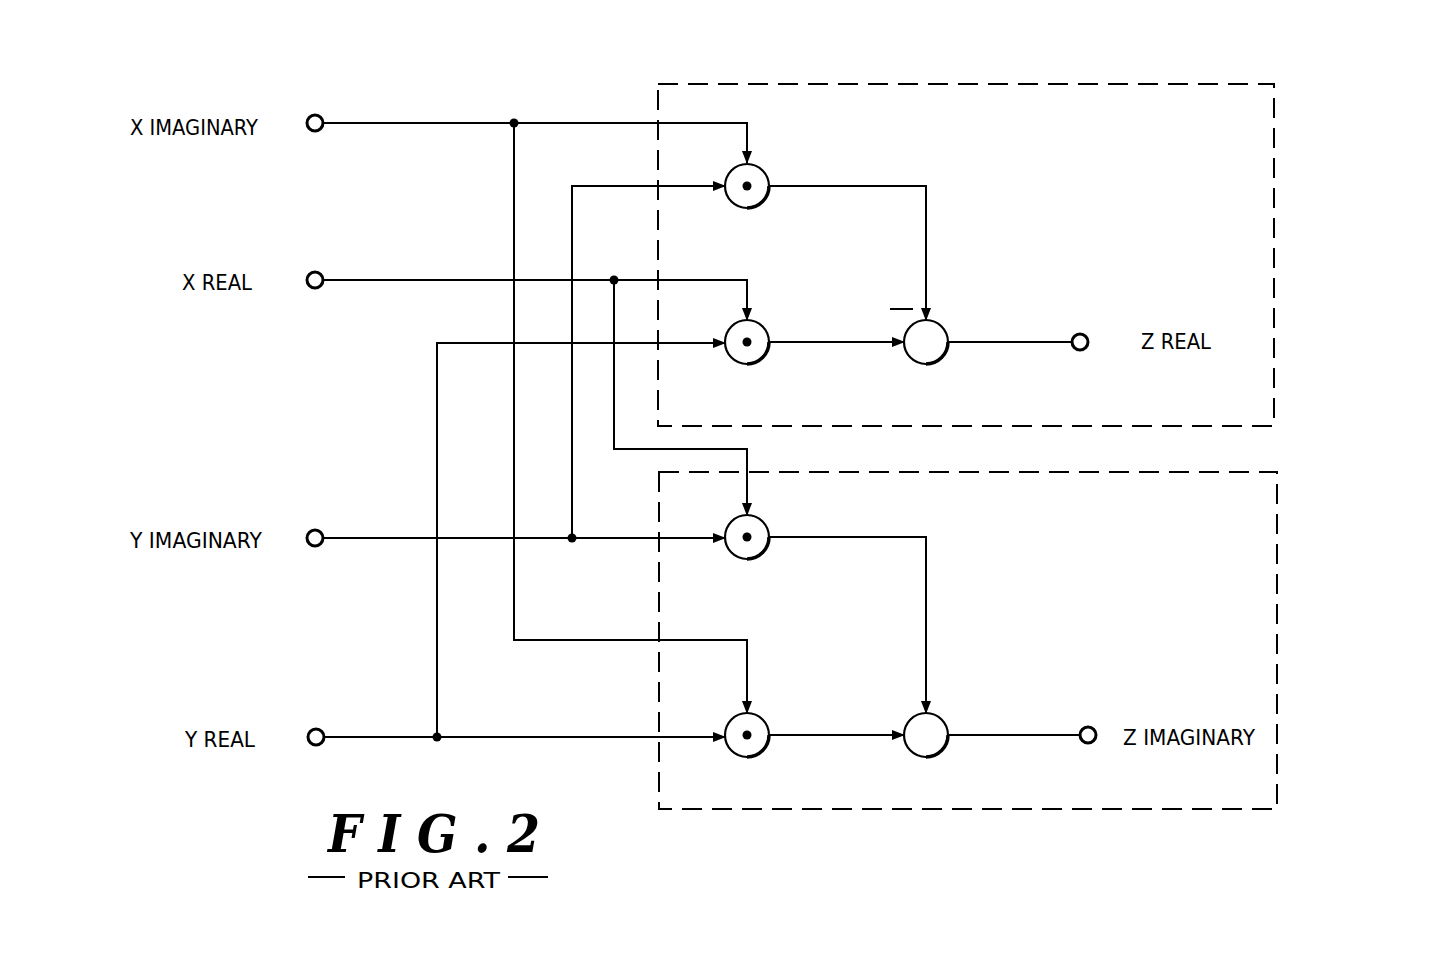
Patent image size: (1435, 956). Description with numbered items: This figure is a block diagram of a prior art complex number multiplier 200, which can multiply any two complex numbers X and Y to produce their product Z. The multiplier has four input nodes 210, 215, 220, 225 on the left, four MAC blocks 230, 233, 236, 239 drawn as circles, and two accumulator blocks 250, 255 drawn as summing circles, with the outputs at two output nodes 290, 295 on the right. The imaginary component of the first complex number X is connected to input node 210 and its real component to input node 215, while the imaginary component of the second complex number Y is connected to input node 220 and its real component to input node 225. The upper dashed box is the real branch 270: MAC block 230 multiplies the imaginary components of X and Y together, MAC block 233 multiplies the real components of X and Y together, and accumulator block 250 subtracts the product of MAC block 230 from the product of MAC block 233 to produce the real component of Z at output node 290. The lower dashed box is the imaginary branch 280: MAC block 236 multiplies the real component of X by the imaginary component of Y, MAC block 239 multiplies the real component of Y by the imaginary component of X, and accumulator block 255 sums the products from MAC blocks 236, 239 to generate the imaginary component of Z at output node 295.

The prior art multiplier 200 is at (1393, 877).
The input node 210 is at (315, 115).
The input node 215 is at (315, 272).
The input node 220 is at (315, 530).
The input node 225 is at (316, 729).
The MAC block 230 is at (763, 170).
The MAC block 233 is at (763, 327).
The MAC block 236 is at (763, 521).
The MAC block 239 is at (763, 720).
The accumulator block 250 is at (942, 326).
The accumulator block 255 is at (942, 720).
The real branch 270 is at (992, 84).
The imaginary branch 280 is at (975, 810).
The output node 290 is at (1083, 334).
The output node 295 is at (1091, 727).